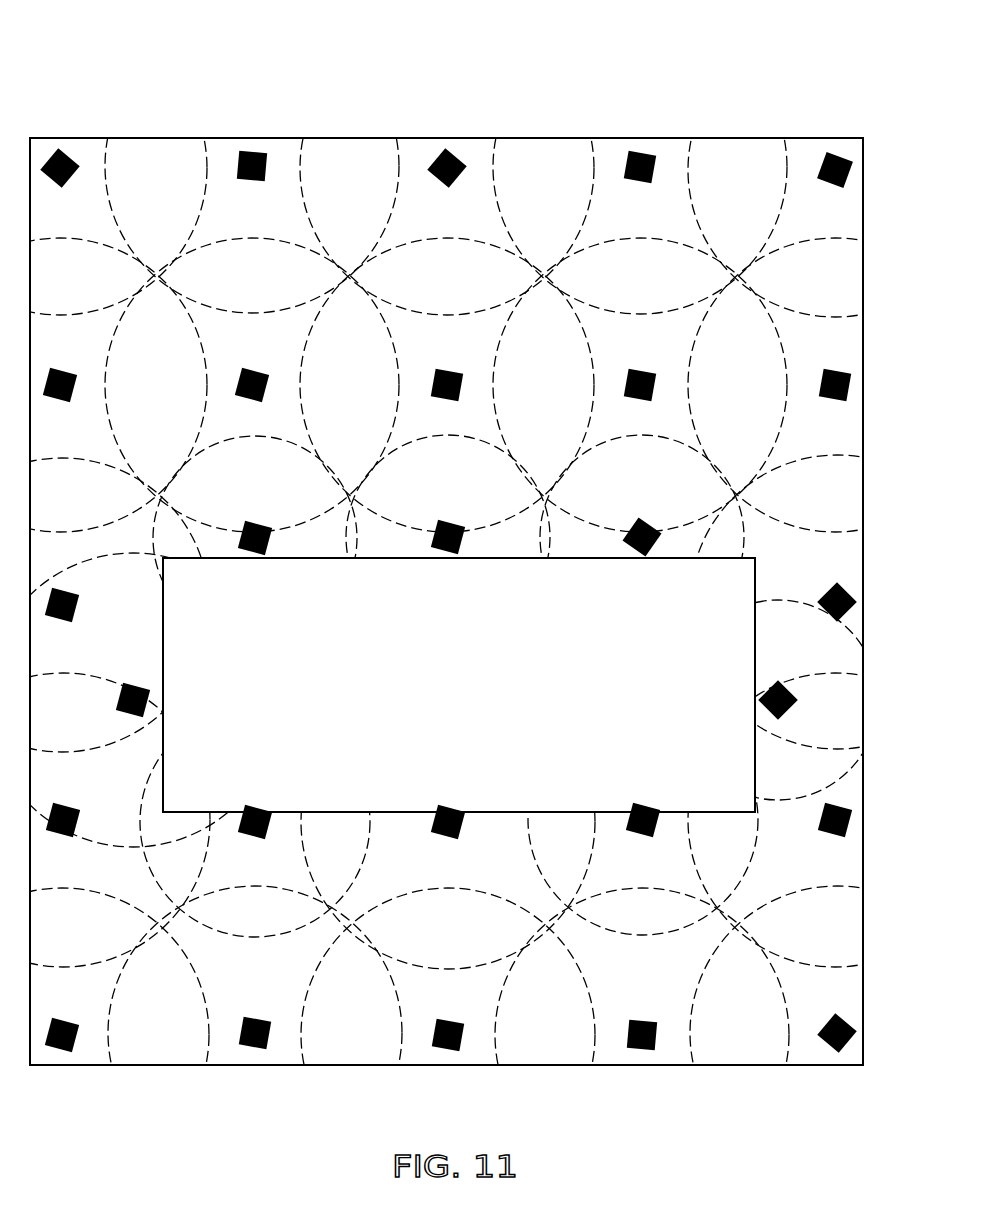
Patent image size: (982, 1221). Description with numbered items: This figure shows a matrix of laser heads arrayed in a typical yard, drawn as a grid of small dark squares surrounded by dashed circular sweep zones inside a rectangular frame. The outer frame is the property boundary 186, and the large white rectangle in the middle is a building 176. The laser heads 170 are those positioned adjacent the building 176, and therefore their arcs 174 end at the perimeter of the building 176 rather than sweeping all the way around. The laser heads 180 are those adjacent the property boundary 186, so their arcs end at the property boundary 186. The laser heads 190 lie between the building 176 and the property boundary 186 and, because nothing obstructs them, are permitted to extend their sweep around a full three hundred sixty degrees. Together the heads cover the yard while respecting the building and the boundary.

The property boundary 186 is at (541, 136).
The arcs 174 is at (242, 240).
The building 176 is at (457, 701).
The laser heads 180 is at (640, 178).
The laser heads 170 is at (257, 522).
The laser heads 190 is at (256, 1021).